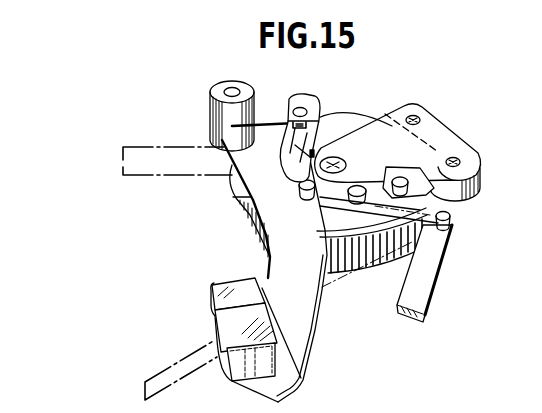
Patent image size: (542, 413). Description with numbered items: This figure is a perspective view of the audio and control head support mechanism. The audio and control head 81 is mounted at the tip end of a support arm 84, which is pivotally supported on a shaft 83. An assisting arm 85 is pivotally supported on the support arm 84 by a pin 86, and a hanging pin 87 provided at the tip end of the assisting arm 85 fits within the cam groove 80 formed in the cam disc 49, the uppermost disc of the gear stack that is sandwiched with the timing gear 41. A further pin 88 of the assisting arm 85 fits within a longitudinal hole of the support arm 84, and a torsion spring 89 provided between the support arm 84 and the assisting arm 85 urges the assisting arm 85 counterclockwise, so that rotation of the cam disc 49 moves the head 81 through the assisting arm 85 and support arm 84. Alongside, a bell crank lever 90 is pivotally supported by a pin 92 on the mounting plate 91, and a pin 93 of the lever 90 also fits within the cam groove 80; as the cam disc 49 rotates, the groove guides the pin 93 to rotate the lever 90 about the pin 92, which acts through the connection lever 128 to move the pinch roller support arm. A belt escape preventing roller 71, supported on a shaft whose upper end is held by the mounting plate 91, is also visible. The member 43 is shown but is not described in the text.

The timing gear 41 is at (246, 228).
The rod 43 is at (188, 175).
The cam disc 49 is at (363, 121).
The belt escape preventing roller 71 is at (482, 165).
The cam groove 80 is at (328, 200).
The audio and control head 81 is at (212, 292).
The shaft 83 is at (233, 80).
The support arm 84 is at (270, 270).
The assisting arm 85 is at (320, 100).
The pin 86 is at (300, 107).
The hanging pin 87 is at (306, 198).
The pin 88 is at (316, 142).
The torsion spring 89 is at (288, 140).
The bell crank lever 90 is at (456, 212).
The mounting plate 91 is at (438, 128).
The pin 92 is at (397, 176).
The pin 93 is at (358, 185).
The connection lever 128 is at (433, 271).